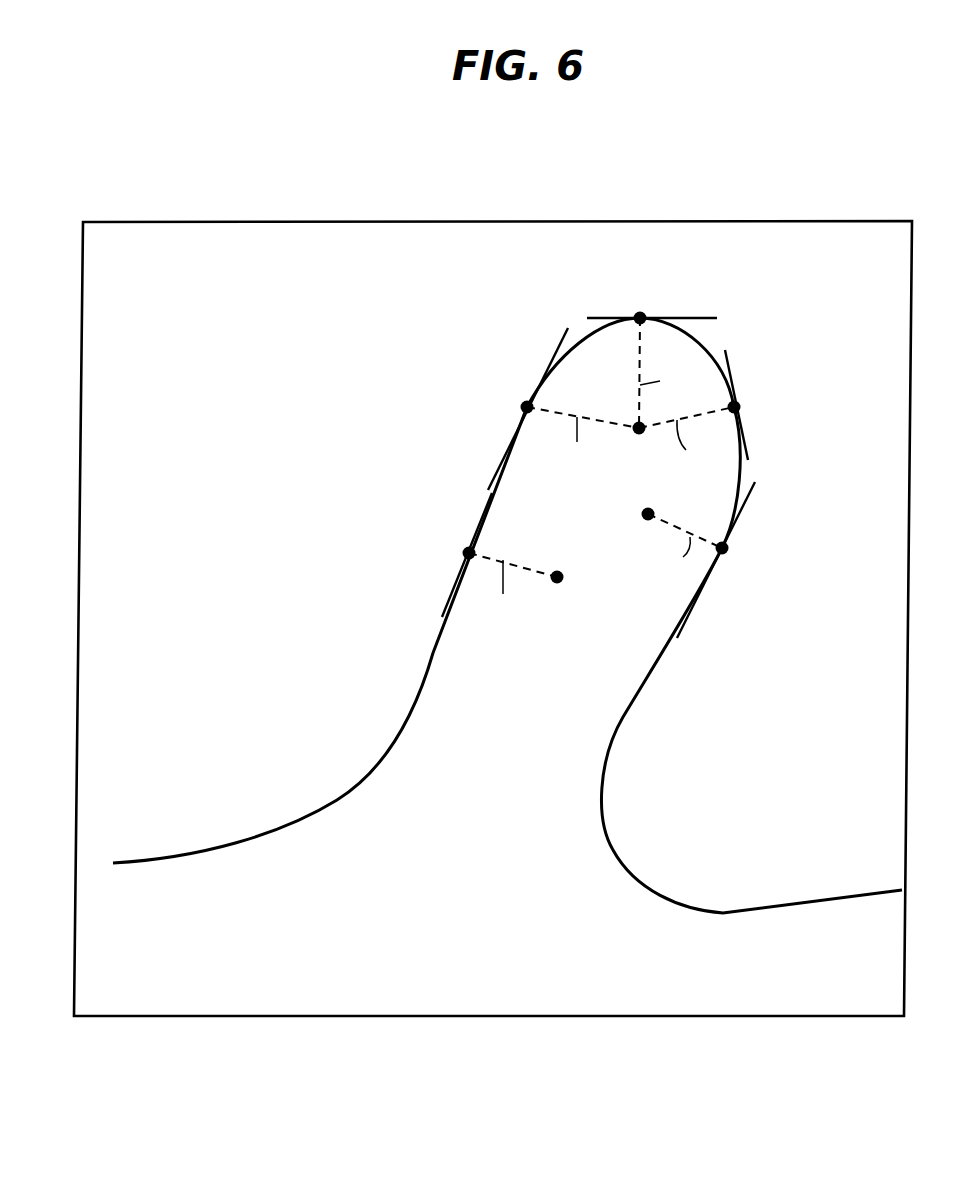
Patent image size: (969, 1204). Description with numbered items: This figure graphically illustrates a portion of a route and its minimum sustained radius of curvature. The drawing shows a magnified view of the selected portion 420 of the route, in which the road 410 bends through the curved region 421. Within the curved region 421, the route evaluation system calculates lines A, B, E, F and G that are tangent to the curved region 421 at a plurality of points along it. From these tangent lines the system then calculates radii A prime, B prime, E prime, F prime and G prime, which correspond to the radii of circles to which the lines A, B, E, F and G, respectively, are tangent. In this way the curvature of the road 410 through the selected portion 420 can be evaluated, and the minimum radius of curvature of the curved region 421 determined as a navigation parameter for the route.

The road 410 is at (230, 850).
The selected portion 420 is at (106, 195).
The curved region 421 is at (508, 332).